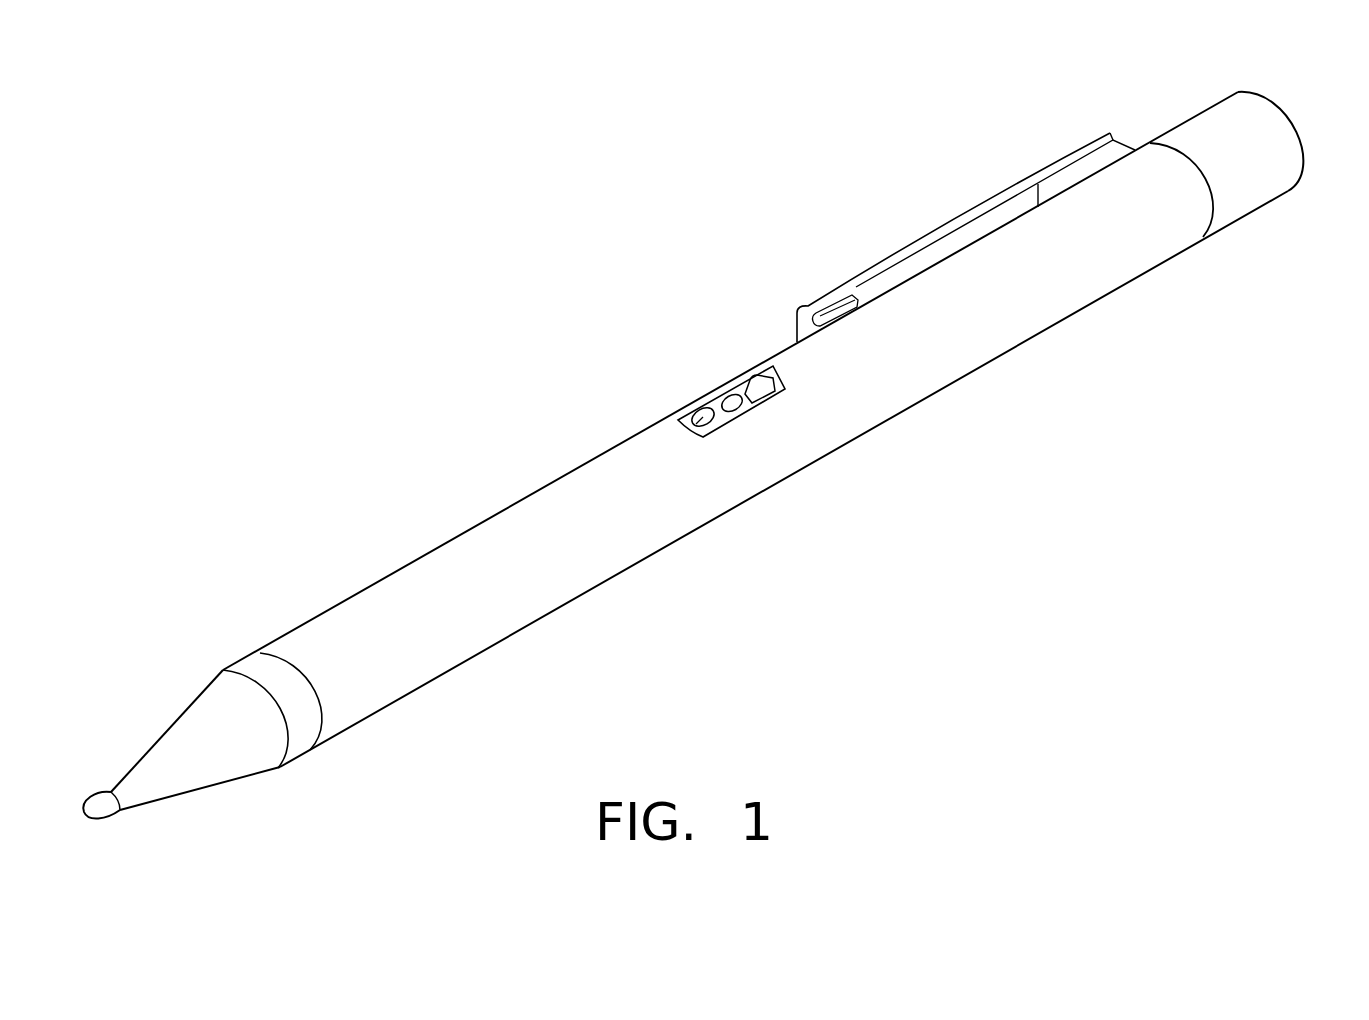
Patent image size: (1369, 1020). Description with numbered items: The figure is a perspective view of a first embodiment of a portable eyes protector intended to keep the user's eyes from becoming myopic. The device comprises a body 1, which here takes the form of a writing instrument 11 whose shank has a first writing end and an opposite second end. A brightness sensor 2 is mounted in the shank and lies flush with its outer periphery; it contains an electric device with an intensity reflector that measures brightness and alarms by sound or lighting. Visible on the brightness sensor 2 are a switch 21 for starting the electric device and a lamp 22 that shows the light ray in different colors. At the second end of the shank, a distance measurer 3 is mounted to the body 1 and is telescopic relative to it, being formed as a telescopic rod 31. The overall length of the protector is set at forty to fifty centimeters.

The body 1 is at (497, 482).
The writing instrument 11 is at (650, 507).
The brightness sensor 2 is at (714, 393).
The switch 21 is at (760, 392).
The lamp 22 is at (678, 418).
The distance measurer 3 is at (1184, 90).
The telescopic rod 31 is at (1257, 175).